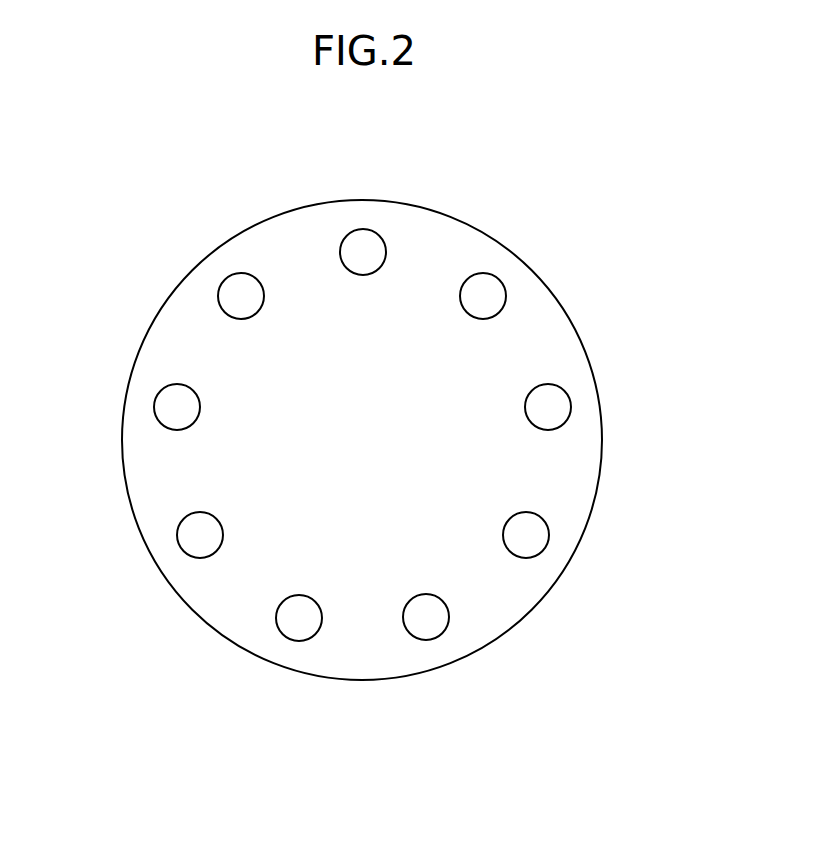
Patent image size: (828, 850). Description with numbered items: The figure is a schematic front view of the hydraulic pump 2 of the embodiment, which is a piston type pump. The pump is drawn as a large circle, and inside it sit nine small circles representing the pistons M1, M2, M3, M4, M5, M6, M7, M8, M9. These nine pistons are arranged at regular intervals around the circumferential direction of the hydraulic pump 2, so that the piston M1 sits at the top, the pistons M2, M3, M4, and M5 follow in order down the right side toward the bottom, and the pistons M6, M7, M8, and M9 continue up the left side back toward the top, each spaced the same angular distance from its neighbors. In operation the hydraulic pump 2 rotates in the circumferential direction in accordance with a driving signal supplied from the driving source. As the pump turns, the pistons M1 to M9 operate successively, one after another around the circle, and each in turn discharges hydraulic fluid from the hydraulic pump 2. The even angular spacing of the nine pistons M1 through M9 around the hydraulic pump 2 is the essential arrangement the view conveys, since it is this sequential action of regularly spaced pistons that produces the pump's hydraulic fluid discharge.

The hydraulic pump 2 is at (512, 188).
The piston M1 is at (362, 229).
The piston M2 is at (502, 282).
The piston M3 is at (572, 404).
The piston M4 is at (547, 548).
The piston M5 is at (432, 640).
The piston M6 is at (297, 641).
The piston M7 is at (178, 540).
The piston M8 is at (154, 410).
The piston M9 is at (220, 288).